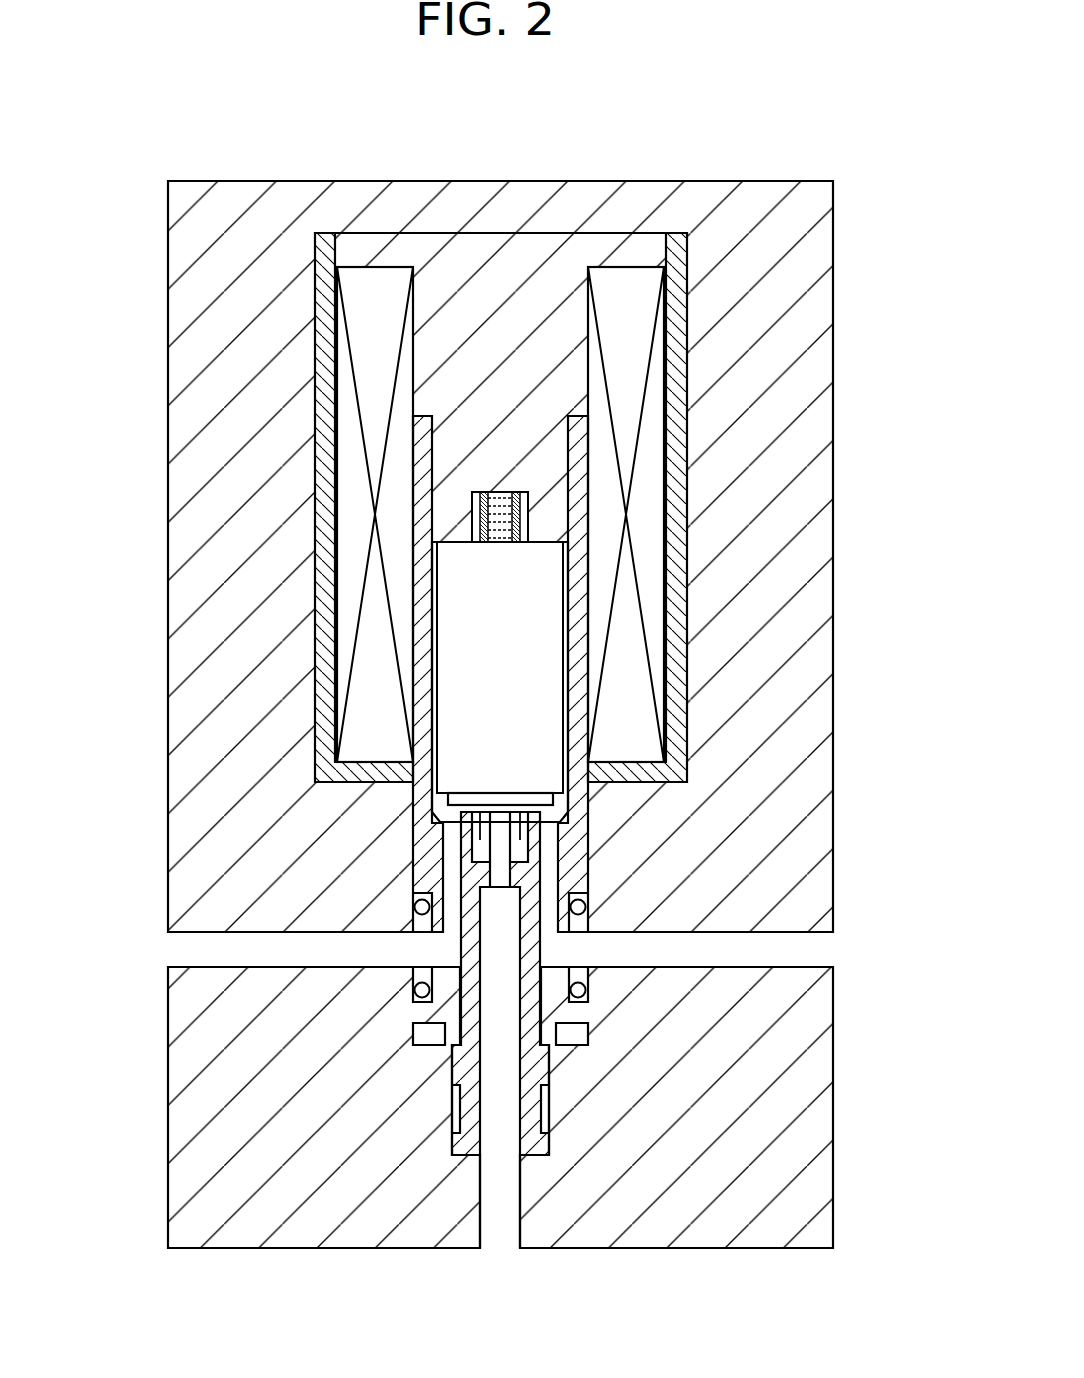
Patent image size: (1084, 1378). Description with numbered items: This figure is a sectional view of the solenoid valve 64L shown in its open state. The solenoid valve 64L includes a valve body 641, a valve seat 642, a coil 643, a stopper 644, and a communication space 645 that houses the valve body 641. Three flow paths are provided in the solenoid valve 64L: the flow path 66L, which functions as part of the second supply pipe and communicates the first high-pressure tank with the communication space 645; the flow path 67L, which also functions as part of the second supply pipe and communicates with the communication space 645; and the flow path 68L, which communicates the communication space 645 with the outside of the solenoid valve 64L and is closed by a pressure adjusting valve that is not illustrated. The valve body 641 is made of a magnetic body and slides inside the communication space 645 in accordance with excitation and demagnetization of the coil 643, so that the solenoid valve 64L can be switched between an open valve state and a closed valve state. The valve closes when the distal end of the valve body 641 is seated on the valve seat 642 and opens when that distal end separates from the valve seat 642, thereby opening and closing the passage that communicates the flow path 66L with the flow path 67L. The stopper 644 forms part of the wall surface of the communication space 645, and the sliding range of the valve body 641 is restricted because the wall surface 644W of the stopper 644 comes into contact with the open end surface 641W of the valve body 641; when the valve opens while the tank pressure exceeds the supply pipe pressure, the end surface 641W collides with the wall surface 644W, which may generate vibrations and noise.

The solenoid valve 64L is at (722, 160).
The valve body 641 is at (540, 592).
The end surface of the valve body 641W is at (547, 535).
The valve seat 642 is at (540, 827).
The coil 643 is at (653, 418).
The stopper 644 is at (448, 335).
The wall surface of the stopper 644W is at (455, 545).
The communication space 645 is at (570, 807).
The flow path 66L is at (180, 965).
The flow path 67L is at (480, 1182).
The flow path 68L is at (821, 965).